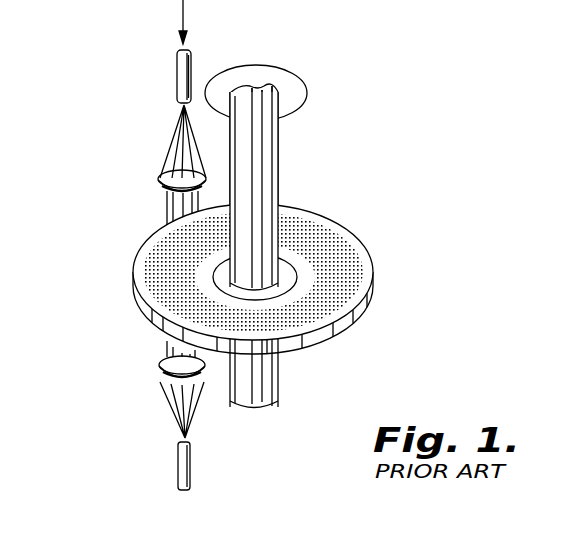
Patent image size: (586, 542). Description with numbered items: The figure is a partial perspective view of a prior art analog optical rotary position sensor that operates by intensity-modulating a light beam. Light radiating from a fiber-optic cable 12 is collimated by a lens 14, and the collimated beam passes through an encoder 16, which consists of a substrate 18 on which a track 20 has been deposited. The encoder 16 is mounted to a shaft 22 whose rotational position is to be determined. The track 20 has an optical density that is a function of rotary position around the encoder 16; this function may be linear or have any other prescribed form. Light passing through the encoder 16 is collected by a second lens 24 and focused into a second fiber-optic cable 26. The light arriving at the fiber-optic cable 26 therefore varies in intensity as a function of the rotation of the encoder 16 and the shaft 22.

The fiber-optic cable 12 is at (179, 81).
The lens 14 is at (165, 182).
The encoder 16 is at (380, 255).
The substrate 18 is at (150, 318).
The track 20 is at (155, 259).
The shaft 22 is at (266, 168).
The lens 24 is at (162, 374).
The fiber-optic cable 26 is at (178, 466).